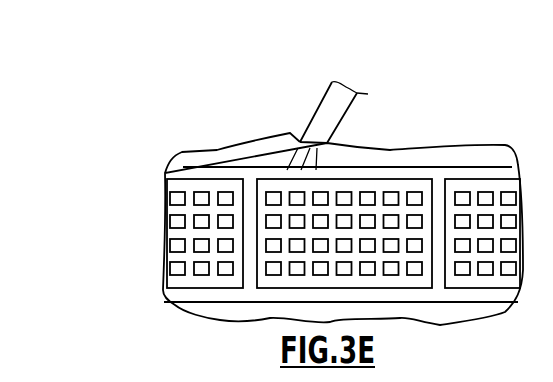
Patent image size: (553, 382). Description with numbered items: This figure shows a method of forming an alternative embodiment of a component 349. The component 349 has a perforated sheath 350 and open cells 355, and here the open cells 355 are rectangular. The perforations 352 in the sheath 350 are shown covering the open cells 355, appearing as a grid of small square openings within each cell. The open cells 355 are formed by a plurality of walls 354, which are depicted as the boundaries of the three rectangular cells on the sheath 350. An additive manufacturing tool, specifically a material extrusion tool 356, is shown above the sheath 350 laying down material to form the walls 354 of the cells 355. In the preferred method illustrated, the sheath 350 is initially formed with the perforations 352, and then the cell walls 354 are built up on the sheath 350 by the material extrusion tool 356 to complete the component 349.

The component 349 is at (388, 138).
The perforated sheath 350 is at (170, 209).
The perforations 352 is at (178, 199).
The walls 354 is at (203, 176).
The open cells 355 is at (175, 288).
The material extrusion tool 356 is at (318, 133).